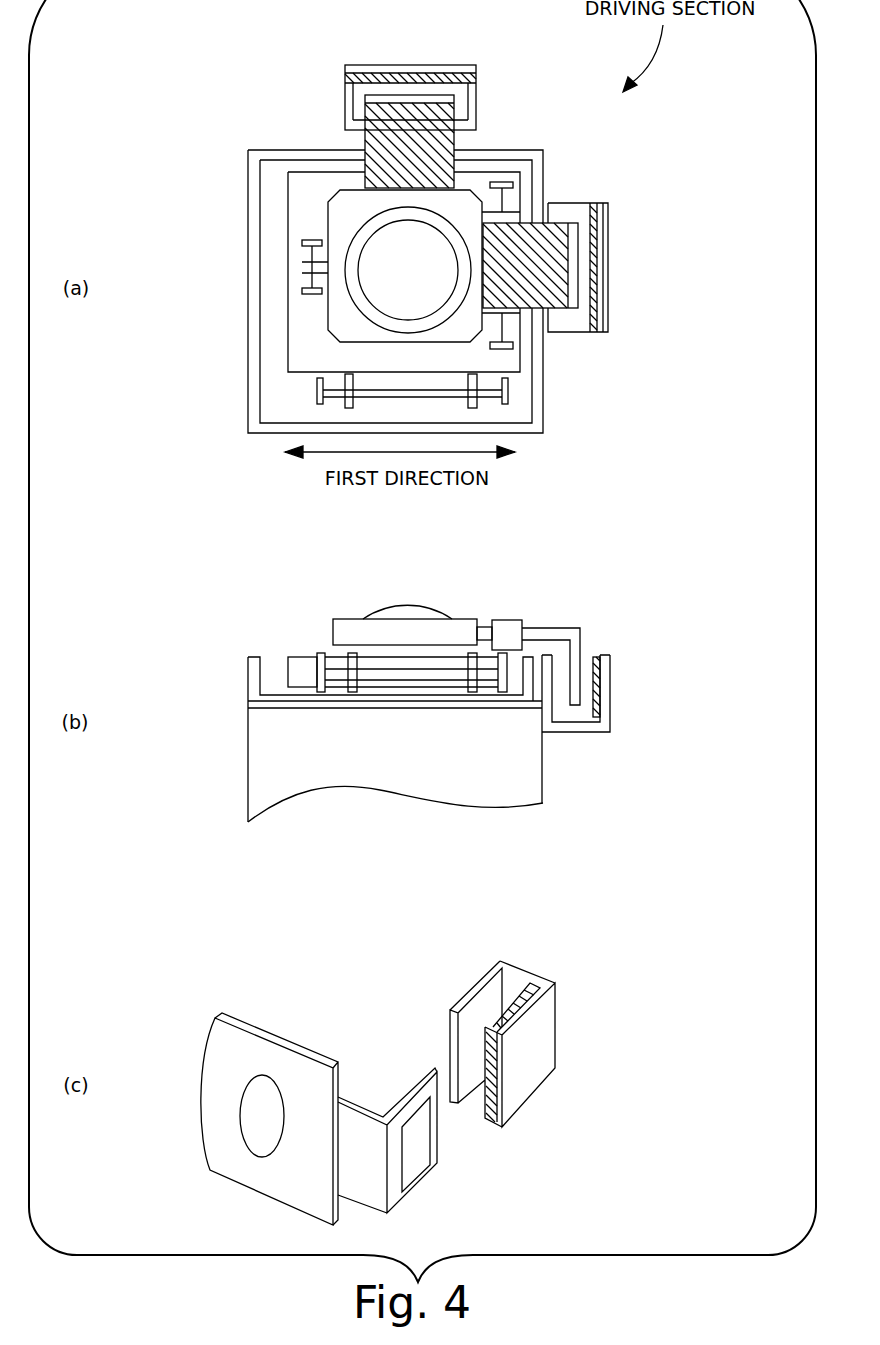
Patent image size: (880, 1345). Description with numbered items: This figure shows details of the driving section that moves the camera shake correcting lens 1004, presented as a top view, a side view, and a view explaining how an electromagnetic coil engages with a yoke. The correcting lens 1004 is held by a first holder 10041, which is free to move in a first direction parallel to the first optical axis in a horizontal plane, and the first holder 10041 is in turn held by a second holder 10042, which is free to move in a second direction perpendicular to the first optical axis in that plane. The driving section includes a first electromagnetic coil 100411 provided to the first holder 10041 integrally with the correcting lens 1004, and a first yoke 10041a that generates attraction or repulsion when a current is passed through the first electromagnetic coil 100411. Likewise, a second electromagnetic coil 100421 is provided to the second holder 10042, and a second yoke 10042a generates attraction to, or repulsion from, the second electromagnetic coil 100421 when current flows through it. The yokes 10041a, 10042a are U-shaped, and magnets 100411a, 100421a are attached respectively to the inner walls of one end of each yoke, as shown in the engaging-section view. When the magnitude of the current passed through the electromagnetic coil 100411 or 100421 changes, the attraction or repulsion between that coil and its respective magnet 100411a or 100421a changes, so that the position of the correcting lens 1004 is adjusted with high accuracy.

The camera shake correcting lens 1004 is at (397, 290).
The first holder 10041 is at (355, 200).
The second holder 10042 is at (307, 352).
The first yoke 10041a is at (605, 290).
The second yoke 10042a is at (384, 70).
The first electromagnetic coil 100411 is at (573, 300).
The second electromagnetic coil 100421 is at (447, 97).
The magnet 100411a is at (596, 203).
The magnet 100421a is at (463, 72).